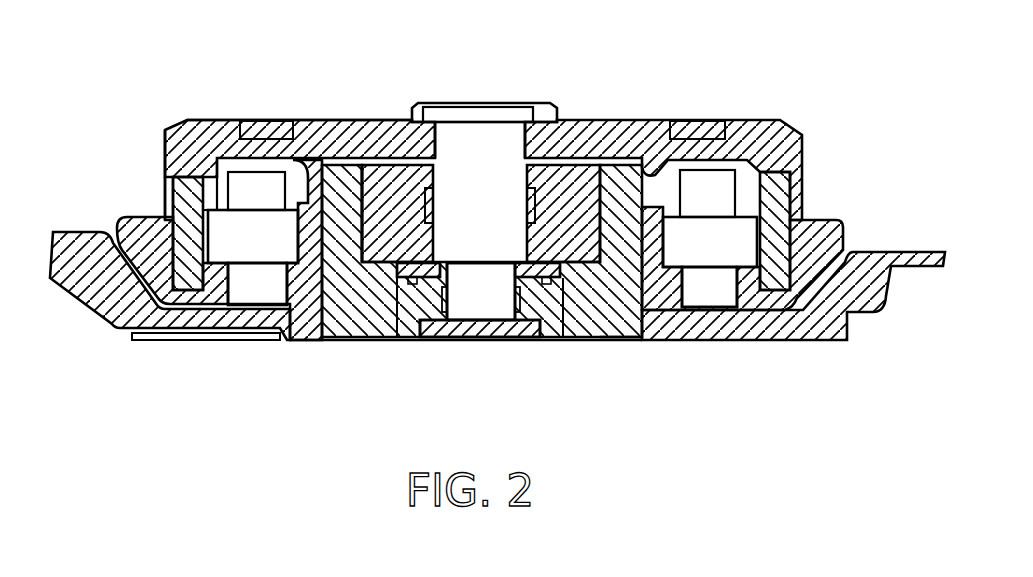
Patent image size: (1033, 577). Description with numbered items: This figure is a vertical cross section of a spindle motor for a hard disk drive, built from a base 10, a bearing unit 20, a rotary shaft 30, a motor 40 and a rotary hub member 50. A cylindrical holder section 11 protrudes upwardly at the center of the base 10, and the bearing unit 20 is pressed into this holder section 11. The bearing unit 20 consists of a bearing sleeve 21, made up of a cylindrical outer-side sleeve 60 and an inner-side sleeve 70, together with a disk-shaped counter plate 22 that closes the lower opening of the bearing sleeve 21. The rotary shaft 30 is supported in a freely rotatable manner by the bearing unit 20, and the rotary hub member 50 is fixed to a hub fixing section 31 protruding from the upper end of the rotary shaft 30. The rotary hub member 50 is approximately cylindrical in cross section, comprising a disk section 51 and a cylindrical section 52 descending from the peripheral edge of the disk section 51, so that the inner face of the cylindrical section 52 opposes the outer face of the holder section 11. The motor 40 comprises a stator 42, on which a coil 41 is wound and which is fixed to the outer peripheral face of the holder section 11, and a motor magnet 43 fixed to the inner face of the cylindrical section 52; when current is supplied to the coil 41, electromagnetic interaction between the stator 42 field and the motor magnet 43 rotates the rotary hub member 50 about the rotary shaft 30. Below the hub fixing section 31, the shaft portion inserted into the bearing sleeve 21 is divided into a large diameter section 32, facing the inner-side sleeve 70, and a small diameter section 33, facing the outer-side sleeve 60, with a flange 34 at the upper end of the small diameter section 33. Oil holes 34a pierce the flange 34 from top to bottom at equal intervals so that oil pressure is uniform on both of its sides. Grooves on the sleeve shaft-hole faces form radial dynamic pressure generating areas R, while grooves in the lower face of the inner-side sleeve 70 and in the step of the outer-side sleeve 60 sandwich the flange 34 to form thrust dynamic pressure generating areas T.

The base 10 is at (748, 344).
The holder section 11 is at (674, 227).
The bearing unit 20 is at (367, 342).
The bearing sleeve 21 is at (624, 342).
The counter plate 22 is at (488, 342).
The rotary shaft 30 is at (480, 118).
The hub fixing section 31 is at (503, 133).
The large diameter section 32 is at (465, 167).
The small diameter section 33 is at (460, 303).
The flange 34 is at (405, 267).
The oil holes 34a is at (500, 262).
The motor 40 is at (215, 191).
The coil 41 is at (256, 188).
The stator 42 is at (247, 259).
The motor magnet 43 is at (207, 238).
The rotary hub member 50 is at (646, 121).
The disk section 51 is at (327, 119).
The cylindrical section 52 is at (165, 165).
The outer-side sleeve 60 is at (390, 322).
The inner-side sleeve 70 is at (378, 168).
The radial dynamic pressure generating area R is at (427, 196).
The thrust dynamic pressure generating area T is at (415, 256).